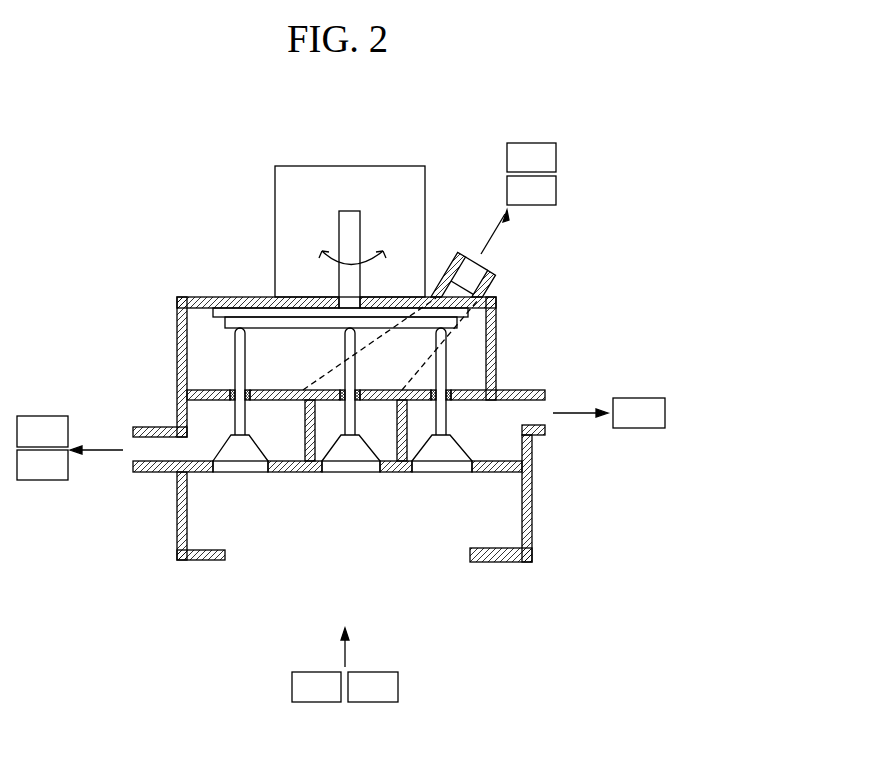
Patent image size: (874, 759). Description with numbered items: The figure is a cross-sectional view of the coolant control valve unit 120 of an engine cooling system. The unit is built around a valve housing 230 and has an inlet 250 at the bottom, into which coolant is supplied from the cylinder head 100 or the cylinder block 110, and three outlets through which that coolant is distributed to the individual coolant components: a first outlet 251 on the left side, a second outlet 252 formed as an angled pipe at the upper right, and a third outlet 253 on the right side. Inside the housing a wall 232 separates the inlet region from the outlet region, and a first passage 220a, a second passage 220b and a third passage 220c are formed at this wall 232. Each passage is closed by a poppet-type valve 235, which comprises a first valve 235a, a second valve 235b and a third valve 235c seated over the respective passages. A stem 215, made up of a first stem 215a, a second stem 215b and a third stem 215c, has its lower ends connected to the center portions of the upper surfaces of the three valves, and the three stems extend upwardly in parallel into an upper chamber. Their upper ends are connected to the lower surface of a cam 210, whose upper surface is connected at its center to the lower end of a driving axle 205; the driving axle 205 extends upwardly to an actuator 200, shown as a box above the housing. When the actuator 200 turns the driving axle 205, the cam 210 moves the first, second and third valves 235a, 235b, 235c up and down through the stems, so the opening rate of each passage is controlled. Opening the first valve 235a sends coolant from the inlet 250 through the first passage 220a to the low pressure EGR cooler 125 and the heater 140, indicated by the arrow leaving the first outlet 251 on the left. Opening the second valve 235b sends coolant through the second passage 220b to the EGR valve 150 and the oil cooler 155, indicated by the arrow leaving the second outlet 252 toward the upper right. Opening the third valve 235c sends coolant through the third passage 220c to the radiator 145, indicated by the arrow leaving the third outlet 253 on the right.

The cylinder head 100 is at (320, 665).
The cylinder block 110 is at (373, 687).
The coolant control valve unit 120 is at (509, 342).
The low pressure EGR cooler 125 is at (70, 435).
The heater 140 is at (42, 465).
The radiator 145 is at (609, 413).
The EGR valve 150 is at (518, 198).
The oil cooler 155 is at (531, 190).
The actuator 200 is at (275, 185).
The driving axle 205 is at (350, 232).
The cam 210 is at (224, 312).
The stem 215 is at (253, 357).
The first stem 215a is at (236, 338).
The second stem 215b is at (346, 340).
The third stem 215c is at (436, 343).
The first passage 220a is at (222, 472).
The second passage 220b is at (370, 457).
The third passage 220c is at (465, 456).
The valve housing 230 is at (178, 541).
The wall 232 is at (291, 473).
The valve 235 is at (320, 518).
The first valve 235a is at (248, 473).
The second valve 235b is at (351, 474).
The third valve 235c is at (441, 474).
The inlet 250 is at (462, 548).
The first outlet 251 is at (147, 440).
The second outlet 252 is at (472, 279).
The third outlet 253 is at (534, 417).